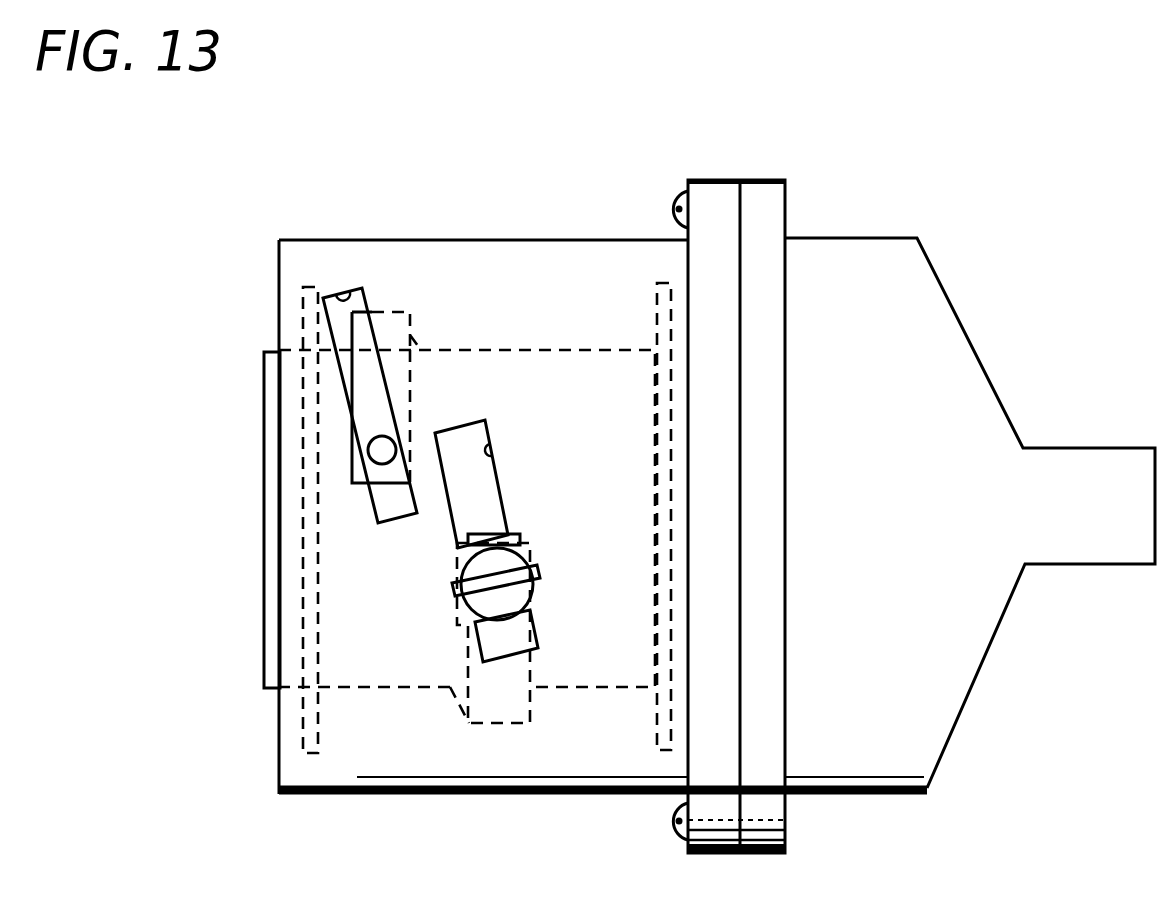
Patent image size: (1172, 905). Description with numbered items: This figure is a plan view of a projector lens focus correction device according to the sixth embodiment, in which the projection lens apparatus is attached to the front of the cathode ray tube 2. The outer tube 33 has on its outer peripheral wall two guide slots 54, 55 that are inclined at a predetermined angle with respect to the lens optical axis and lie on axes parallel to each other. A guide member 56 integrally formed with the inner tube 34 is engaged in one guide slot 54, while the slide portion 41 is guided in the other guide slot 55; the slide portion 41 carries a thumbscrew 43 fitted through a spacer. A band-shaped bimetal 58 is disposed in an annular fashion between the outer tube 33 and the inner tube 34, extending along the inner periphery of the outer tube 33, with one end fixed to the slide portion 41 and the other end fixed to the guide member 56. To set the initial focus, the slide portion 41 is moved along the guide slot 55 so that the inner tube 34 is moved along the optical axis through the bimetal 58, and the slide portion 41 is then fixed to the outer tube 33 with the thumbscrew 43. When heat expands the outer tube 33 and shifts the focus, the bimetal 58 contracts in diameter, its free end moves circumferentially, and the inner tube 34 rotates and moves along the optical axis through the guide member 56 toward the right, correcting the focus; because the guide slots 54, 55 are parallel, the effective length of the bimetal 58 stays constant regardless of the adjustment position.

The cathode ray tube 2 is at (960, 656).
The outer tube 33 is at (628, 240).
The inner tube 34 is at (538, 347).
The slide portion 41 is at (477, 625).
The thumbscrew 43 is at (516, 598).
The guide slot 54 is at (343, 296).
The guide slot 55 is at (492, 450).
The guide member 56 is at (375, 457).
The bimetal 58 is at (412, 367).